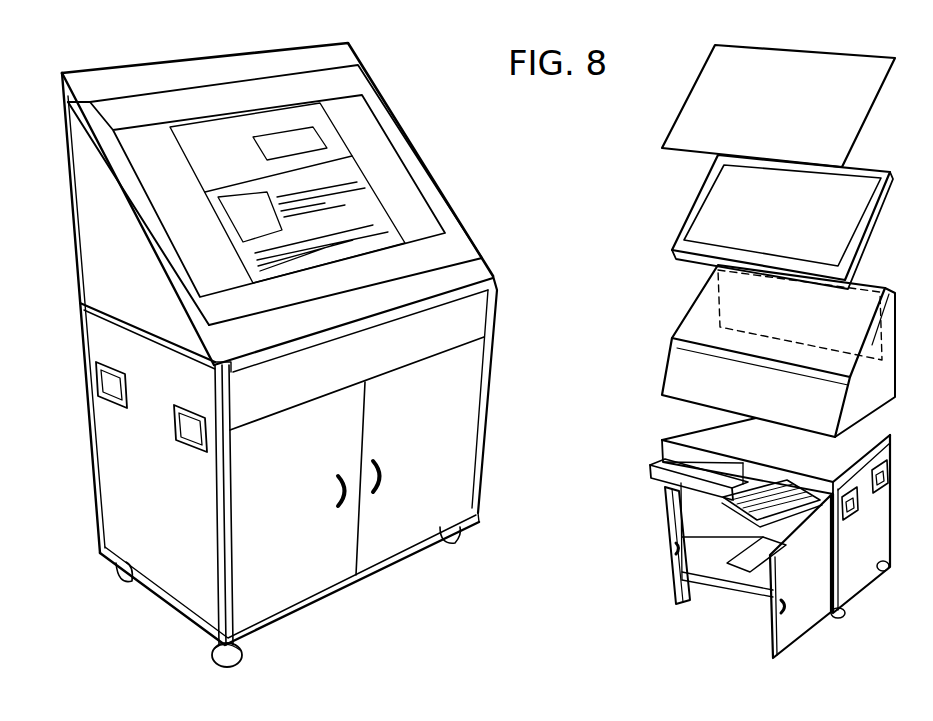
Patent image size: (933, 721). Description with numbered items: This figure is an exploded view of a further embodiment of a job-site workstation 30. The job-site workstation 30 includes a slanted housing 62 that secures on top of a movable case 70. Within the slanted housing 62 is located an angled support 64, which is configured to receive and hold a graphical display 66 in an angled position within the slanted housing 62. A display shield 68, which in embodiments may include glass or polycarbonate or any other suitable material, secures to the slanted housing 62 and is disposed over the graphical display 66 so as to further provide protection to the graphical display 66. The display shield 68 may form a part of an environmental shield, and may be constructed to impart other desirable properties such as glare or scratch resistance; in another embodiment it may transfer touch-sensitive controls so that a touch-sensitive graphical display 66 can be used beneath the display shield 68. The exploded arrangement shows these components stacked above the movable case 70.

The job-site workstation 30 is at (473, 203).
The slanted housing 62 is at (672, 383).
The angled support 64 is at (700, 300).
The graphical display 66 is at (700, 196).
The display shield 68 is at (687, 102).
The movable case 70 is at (667, 503).